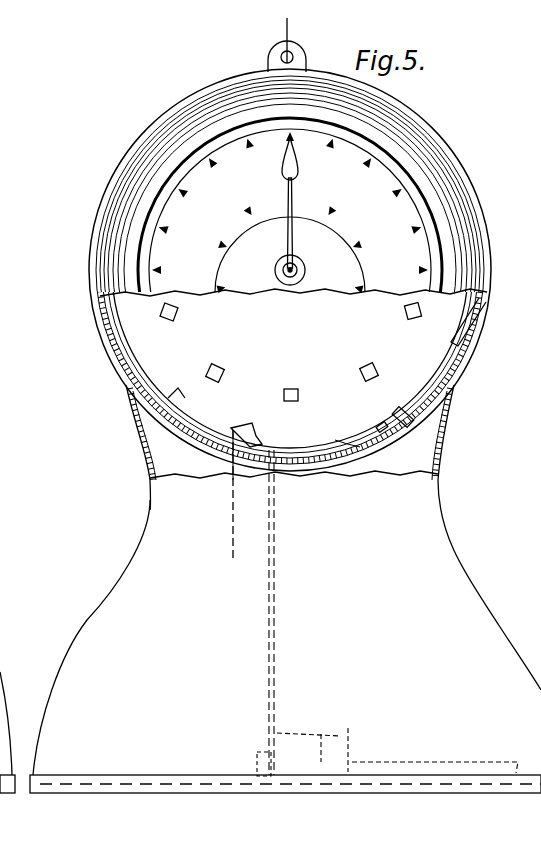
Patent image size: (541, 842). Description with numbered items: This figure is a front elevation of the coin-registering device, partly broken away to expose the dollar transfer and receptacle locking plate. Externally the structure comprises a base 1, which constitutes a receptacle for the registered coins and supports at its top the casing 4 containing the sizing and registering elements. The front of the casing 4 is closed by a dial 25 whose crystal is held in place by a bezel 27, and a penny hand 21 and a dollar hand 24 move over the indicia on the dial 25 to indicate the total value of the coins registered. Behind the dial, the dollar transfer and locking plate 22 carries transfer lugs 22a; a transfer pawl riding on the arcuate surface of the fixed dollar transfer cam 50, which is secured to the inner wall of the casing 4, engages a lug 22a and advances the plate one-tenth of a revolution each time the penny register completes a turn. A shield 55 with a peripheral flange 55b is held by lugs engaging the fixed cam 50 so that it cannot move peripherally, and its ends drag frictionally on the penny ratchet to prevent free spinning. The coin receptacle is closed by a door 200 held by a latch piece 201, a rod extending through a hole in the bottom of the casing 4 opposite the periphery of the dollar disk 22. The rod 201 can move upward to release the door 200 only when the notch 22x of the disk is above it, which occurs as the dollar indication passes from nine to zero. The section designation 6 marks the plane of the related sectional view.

The base 1 is at (88, 620).
The casing 4 is at (484, 317).
The section line 6- 6 is at (283, 25).
The penny hand 21 is at (297, 186).
The dollar transfer and locking plate 22 is at (367, 408).
The transfer lug 22a is at (360, 368).
The notch 22x is at (229, 425).
The dollar hand 24 is at (297, 224).
The dial 25 is at (178, 245).
The bezel 27 is at (153, 157).
The dollar transfer cam 50 is at (425, 397).
The shield 55 is at (230, 437).
The peripheral flange 55b is at (347, 443).
The door 200 is at (310, 738).
The latch piece 201 is at (268, 666).